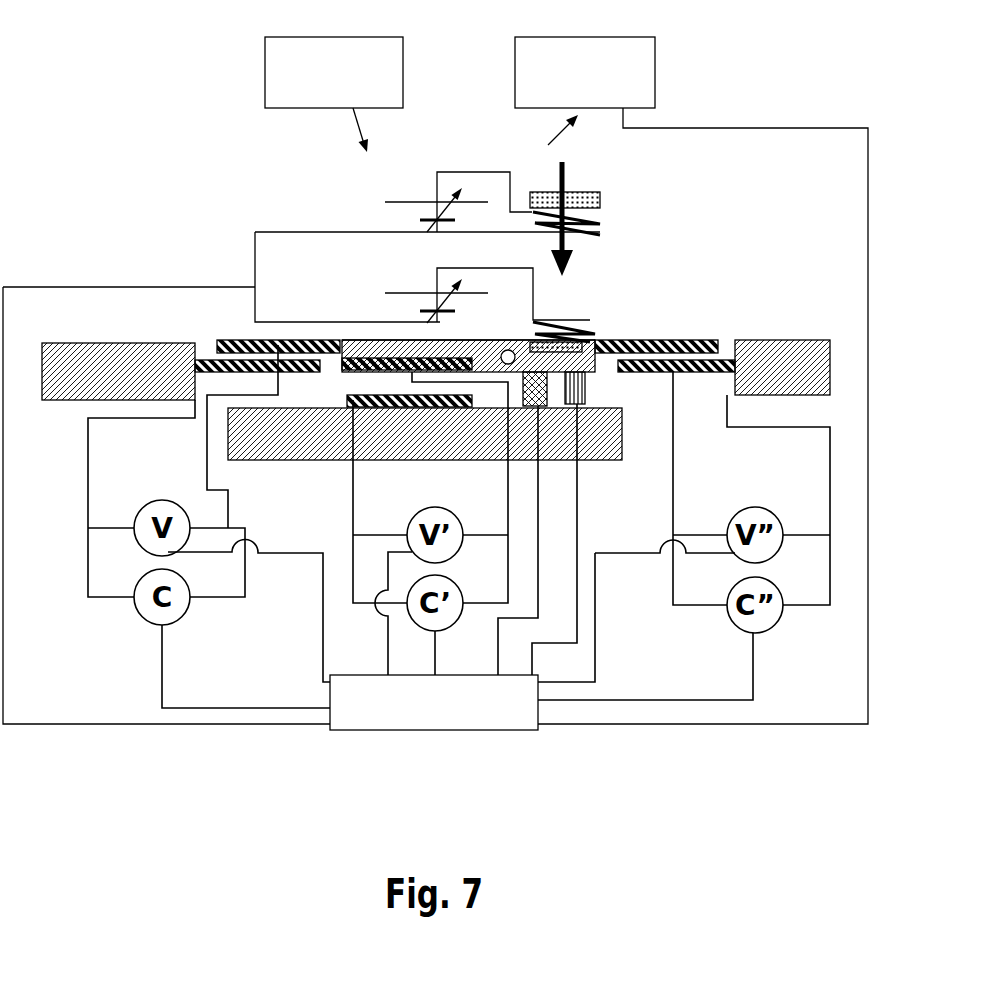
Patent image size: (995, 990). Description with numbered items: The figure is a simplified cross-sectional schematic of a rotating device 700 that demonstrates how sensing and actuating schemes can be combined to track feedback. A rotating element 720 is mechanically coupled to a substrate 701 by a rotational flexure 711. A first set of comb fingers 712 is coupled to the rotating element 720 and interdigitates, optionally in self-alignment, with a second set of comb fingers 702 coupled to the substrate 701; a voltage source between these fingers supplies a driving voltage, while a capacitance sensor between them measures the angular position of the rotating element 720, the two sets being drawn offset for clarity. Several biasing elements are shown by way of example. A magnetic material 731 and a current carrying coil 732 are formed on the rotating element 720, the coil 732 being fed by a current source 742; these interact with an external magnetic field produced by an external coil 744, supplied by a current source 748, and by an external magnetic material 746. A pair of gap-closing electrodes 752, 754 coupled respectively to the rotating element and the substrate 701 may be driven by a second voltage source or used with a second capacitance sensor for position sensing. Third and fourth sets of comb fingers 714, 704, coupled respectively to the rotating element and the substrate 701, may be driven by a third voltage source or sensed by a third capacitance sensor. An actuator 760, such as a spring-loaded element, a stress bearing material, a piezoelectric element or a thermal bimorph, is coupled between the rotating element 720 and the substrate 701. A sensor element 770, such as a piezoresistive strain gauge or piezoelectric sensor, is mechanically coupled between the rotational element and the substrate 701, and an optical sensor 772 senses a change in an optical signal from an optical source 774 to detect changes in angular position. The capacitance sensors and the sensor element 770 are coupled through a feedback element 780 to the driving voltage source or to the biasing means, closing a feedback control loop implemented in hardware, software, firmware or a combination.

The rotating device 700 is at (68, 31).
The substrate 701 is at (120, 387).
The second set of comb fingers 702 is at (218, 360).
The fourth set of comb fingers 704 is at (668, 372).
The rotational flexure 711 is at (508, 350).
The first set of comb fingers 712 is at (241, 340).
The third set of comb fingers 714 is at (689, 340).
The rotating element 720 is at (342, 342).
The magnetic material 731 is at (583, 343).
The current carrying coil 732 is at (560, 325).
The current source 742 is at (437, 293).
The external coil 744 is at (592, 232).
The magnetic material 746 is at (560, 192).
The current source 748 is at (437, 202).
The gap-closing electrode 752 is at (388, 396).
The gap-closing electrode 754 is at (386, 342).
The actuator 760 is at (600, 437).
The sensor element 770 is at (503, 421).
The optical sensor 772 is at (655, 88).
The optical source 774 is at (265, 99).
The feedback element 780 is at (460, 730).